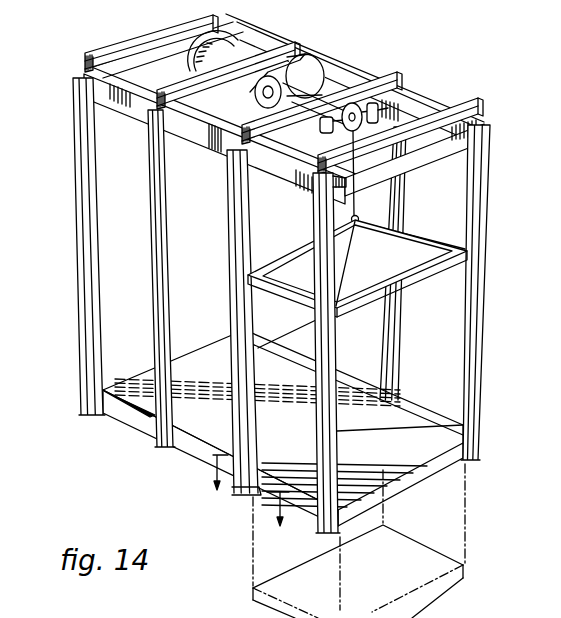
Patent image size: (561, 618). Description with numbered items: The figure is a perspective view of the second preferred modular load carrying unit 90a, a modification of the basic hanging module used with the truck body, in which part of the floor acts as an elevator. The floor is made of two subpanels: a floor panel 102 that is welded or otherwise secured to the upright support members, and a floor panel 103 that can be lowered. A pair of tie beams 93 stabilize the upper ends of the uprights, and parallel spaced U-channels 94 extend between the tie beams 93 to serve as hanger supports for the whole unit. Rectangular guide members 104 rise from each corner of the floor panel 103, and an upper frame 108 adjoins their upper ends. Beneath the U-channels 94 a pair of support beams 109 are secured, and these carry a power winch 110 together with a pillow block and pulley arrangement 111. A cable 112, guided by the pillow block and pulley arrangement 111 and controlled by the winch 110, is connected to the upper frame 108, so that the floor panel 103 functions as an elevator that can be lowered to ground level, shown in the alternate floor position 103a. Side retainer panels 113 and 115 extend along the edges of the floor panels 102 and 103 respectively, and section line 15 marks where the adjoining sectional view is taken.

The section line 15 is at (250, 500).
The modular load carrying unit 90a is at (134, 432).
The tie beams 93 is at (139, 112).
The U-channels 94 is at (131, 44).
The floor panel 102 is at (203, 360).
The floor panel 103 is at (426, 455).
The alternate floor position 103a is at (418, 580).
The rectangular guide members 104 is at (255, 491).
The upper frame 108 is at (427, 272).
The support beams 109 is at (224, 42).
The power winch 110 is at (313, 63).
The pillow block and pulley arrangement 111 is at (372, 114).
The cable 112 is at (360, 188).
The side retainer panel 113 is at (312, 515).
The side retainer panel 115 is at (200, 457).